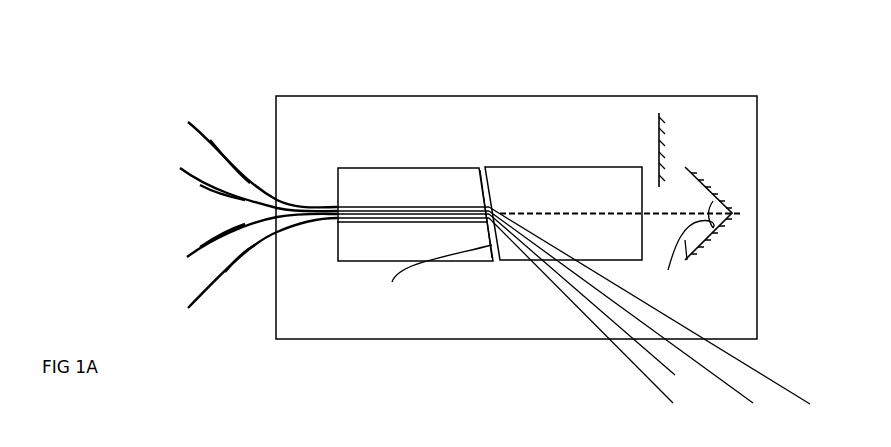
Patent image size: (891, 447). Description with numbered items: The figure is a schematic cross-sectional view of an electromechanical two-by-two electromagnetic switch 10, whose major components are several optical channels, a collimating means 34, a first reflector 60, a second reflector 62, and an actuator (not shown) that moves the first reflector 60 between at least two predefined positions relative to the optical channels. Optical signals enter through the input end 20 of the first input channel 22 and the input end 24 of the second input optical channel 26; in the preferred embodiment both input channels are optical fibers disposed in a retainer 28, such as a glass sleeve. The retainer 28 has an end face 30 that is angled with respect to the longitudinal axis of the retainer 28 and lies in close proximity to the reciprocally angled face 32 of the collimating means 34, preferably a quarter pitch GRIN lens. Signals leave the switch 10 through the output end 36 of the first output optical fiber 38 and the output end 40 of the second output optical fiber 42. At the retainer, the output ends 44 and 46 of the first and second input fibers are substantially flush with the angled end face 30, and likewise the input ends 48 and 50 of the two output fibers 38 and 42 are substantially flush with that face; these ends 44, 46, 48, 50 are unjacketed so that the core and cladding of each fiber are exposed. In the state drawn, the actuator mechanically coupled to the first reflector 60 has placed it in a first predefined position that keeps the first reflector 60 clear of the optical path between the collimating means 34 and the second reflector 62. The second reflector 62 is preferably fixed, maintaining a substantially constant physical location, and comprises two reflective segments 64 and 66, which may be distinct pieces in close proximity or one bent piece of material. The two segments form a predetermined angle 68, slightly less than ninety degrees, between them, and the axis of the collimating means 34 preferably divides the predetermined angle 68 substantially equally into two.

The 2×2 electromagnetic switch 10 is at (606, 70).
The input end of the first input channel 20 is at (188, 122).
The first input channel 22 is at (220, 148).
The input end of the second input optical channel 24 is at (180, 168).
The second input optical channel 26 is at (207, 188).
The retainer 28 is at (388, 167).
The end face of the retainer 30 is at (392, 282).
The angled face of the collimating means 32 is at (489, 191).
The collimating means 34 is at (558, 167).
The output end of the first output optical fiber 36 is at (190, 311).
The first output optical fiber 38 is at (233, 263).
The output end of the second output optical fiber 40 is at (187, 257).
The second output optical fiber 42 is at (207, 242).
The output end of the first input optical fiber 44 is at (663, 311).
The output end of the second input optical fiber 46 is at (627, 317).
The input end of the first output fiber 48 is at (587, 318).
The input end of the second output fiber 50 is at (592, 302).
The first reflector 60 is at (672, 135).
The second reflector 62 is at (730, 170).
The reflective segment 64 is at (703, 168).
The reflective segment 66 is at (717, 248).
The predetermined angle 68 is at (685, 260).